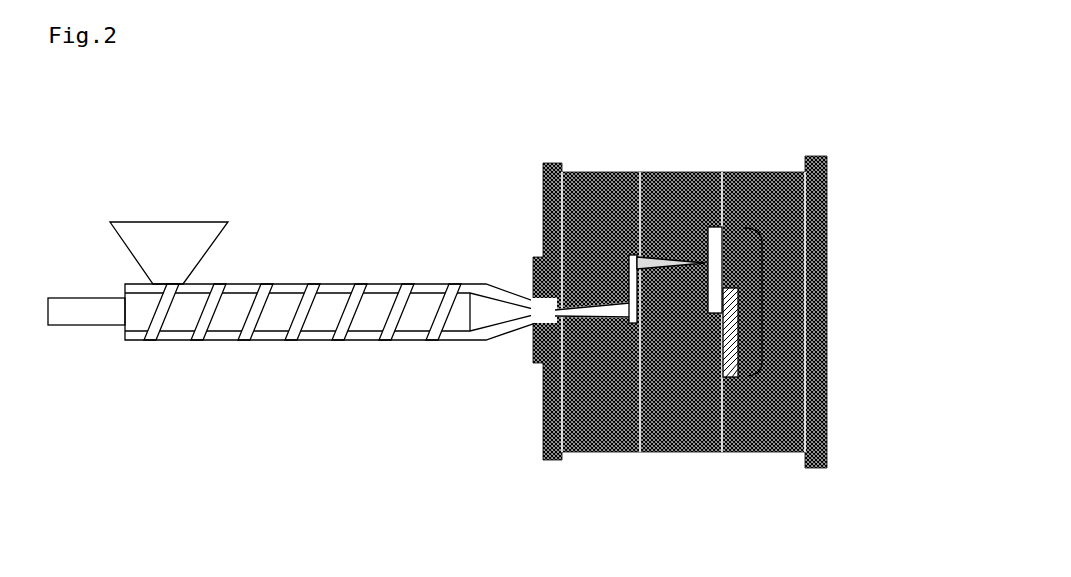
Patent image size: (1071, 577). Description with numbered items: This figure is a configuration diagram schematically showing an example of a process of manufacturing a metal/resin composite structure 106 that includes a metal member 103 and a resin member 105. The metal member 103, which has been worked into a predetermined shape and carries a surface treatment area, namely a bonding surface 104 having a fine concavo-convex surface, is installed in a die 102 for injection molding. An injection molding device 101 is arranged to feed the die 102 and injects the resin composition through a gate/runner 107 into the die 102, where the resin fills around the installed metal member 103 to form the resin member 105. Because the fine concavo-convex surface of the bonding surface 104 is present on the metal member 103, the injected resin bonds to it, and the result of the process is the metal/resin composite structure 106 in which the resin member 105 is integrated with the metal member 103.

The injection molding device 101 is at (255, 285).
The die 102 is at (832, 150).
The metal member 103 is at (740, 355).
The bonding surface 104 is at (733, 293).
The resin member 105 is at (707, 297).
The metal/resin composite structure 106 is at (738, 290).
The gate/runner 107 is at (630, 297).